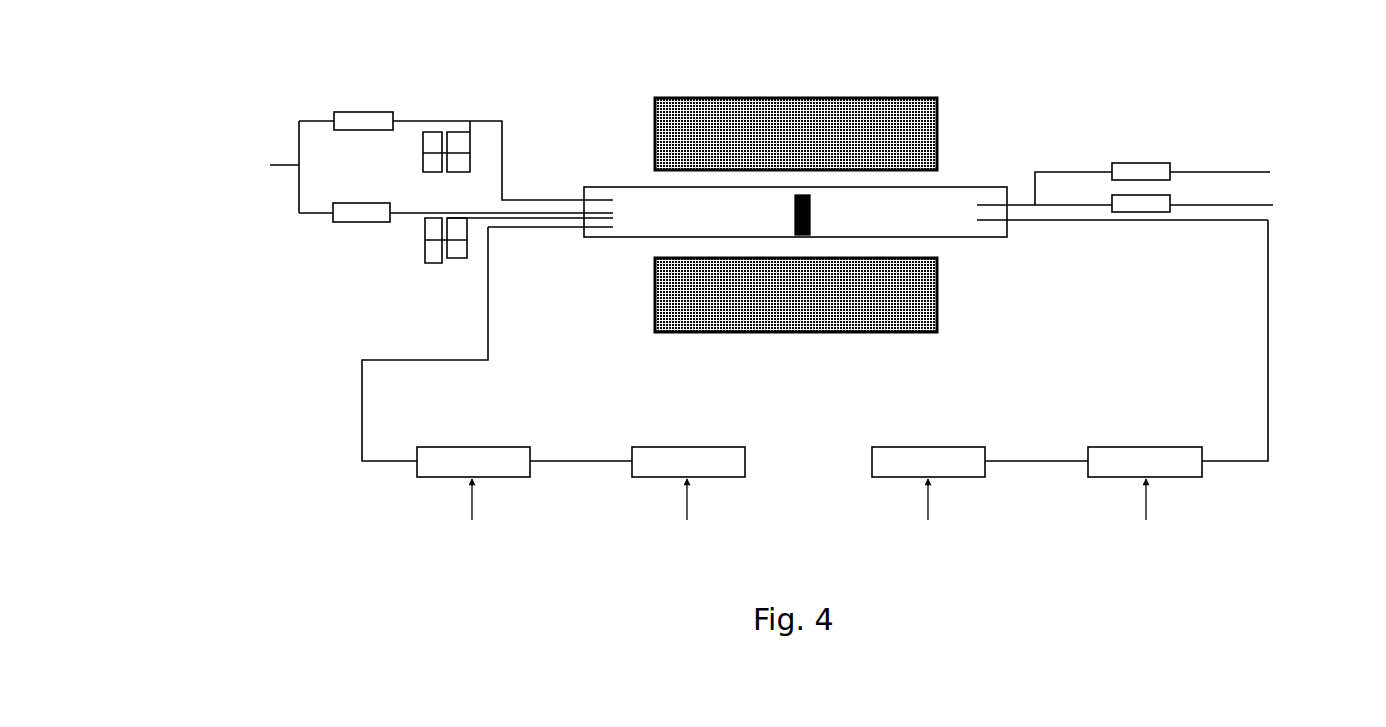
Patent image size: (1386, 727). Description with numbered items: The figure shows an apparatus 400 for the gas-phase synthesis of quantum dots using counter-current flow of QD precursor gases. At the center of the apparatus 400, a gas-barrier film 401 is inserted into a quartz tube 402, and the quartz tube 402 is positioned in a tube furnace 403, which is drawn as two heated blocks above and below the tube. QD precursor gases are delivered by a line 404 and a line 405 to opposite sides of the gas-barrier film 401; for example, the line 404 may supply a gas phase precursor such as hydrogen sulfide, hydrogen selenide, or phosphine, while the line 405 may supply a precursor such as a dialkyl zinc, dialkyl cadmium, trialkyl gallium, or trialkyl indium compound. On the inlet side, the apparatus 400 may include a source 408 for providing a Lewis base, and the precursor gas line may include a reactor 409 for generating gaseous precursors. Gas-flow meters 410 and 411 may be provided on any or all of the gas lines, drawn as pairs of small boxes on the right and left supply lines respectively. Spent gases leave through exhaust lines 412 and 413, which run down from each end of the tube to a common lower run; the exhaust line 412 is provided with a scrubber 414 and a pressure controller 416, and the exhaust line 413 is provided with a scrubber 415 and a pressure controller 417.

The apparatus 400 is at (402, 518).
The gas-barrier film 401 is at (792, 218).
The quartz tube 402 is at (938, 242).
The tube furnace 403 is at (867, 150).
The line 404 is at (1182, 180).
The line 405 is at (270, 163).
The source 408 is at (437, 258).
The reactor 409 is at (453, 160).
The gas-flow meter 410 is at (1142, 195).
The gas-flow meter 411 is at (372, 129).
The exhaust line 412 is at (362, 425).
The exhaust line 413 is at (1238, 460).
The scrubber 414 is at (473, 502).
The scrubber 415 is at (1145, 508).
The pressure controller 416 is at (688, 502).
The pressure controller 417 is at (928, 502).